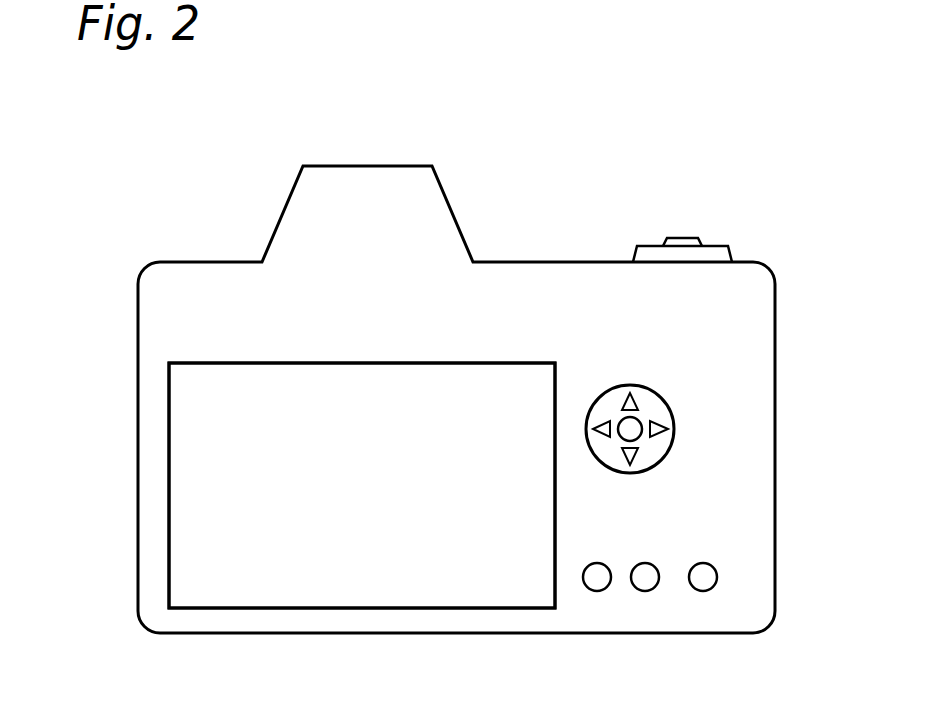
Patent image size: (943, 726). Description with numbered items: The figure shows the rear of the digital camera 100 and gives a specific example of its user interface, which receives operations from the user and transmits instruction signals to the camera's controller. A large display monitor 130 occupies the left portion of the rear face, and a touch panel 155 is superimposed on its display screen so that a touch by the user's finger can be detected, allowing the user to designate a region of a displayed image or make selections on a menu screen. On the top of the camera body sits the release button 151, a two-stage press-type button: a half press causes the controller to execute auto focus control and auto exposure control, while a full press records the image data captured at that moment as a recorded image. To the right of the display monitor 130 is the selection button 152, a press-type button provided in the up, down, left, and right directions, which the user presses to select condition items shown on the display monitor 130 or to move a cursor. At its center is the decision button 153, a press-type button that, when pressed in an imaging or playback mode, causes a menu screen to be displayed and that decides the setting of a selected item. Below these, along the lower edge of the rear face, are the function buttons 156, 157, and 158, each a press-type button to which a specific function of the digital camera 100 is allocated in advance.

The digital camera 100 is at (226, 160).
The display monitor 130 is at (203, 363).
The touch panel 155 is at (203, 487).
The release button 151 is at (687, 238).
The selection button 152 is at (657, 423).
The decision button 153 is at (638, 438).
The function button 156 is at (703, 591).
The function button 157 is at (645, 591).
The function button 158 is at (597, 591).